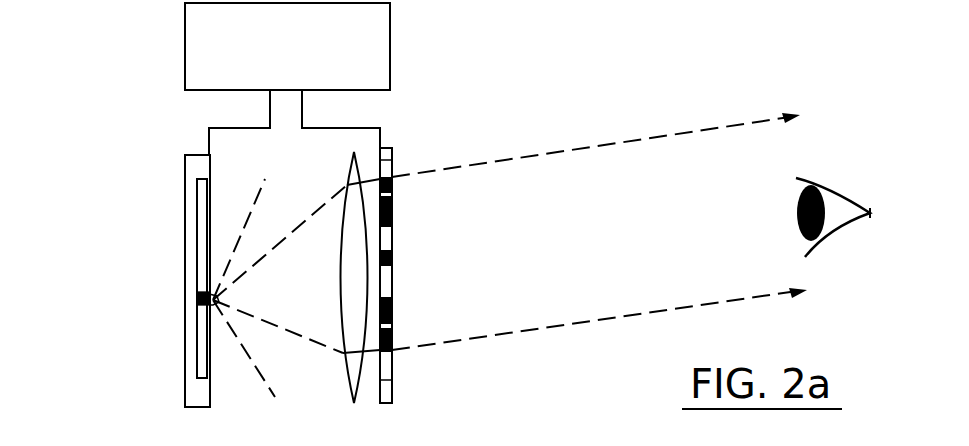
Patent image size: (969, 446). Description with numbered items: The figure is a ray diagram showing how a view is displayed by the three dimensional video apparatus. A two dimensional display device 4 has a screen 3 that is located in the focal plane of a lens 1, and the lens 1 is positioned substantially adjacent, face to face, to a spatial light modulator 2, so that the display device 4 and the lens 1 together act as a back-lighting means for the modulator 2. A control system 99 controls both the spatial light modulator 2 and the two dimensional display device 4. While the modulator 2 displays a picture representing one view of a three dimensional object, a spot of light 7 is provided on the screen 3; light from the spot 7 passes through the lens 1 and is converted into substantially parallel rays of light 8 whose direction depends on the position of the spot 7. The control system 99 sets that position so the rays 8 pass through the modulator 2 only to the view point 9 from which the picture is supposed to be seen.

The control system 99 is at (377, 48).
The lens 1 is at (358, 244).
The spatial light modulator 2 is at (388, 158).
The screen 3 is at (203, 257).
The two dimensional display device 4 is at (186, 214).
The spot of light 7 is at (198, 298).
The substantially parallel rays of light 8 is at (567, 148).
The view point 9 is at (823, 233).